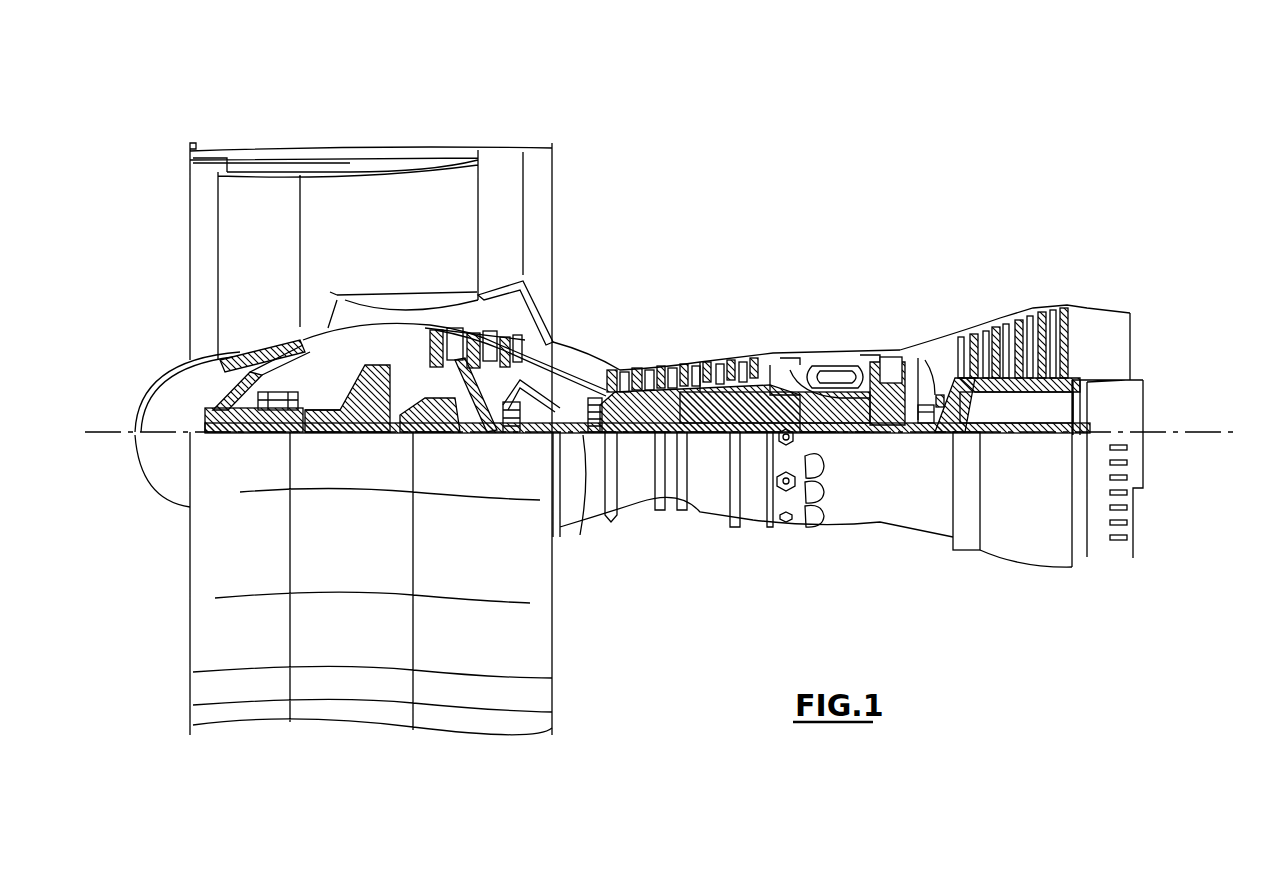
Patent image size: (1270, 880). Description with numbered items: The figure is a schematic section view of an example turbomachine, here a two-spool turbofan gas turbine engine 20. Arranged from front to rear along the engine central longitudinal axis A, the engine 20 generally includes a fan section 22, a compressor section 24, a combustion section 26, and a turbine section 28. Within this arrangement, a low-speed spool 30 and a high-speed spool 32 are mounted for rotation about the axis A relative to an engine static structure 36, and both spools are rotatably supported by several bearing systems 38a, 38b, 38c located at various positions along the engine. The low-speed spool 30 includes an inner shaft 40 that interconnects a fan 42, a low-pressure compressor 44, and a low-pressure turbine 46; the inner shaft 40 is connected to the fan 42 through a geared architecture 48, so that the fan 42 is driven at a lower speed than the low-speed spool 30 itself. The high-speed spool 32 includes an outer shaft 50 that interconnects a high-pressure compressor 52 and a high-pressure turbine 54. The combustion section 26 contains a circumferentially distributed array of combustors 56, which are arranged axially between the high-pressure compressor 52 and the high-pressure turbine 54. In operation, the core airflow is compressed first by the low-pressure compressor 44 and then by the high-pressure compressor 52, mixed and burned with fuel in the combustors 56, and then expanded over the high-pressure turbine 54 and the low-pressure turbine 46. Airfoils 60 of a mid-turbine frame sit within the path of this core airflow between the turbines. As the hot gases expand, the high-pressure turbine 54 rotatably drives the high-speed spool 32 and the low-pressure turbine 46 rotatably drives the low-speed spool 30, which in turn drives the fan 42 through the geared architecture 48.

The gas turbine engine 20 is at (840, 188).
The fan section 22 is at (300, 140).
The compressor section 24 is at (606, 336).
The combustion section 26 is at (826, 322).
The turbine section 28 is at (974, 288).
The low-speed spool 30 is at (711, 445).
The high-speed spool 32 is at (752, 397).
The engine static structure 36 is at (750, 528).
The bearing system 38a is at (303, 434).
The bearing system 38b is at (512, 434).
The bearing system 38c is at (930, 428).
The inner shaft 40 is at (580, 520).
The fan 42 is at (273, 281).
The low-pressure compressor 44 is at (487, 332).
The low-pressure turbine 46 is at (1018, 330).
The geared architecture 48 is at (380, 415).
The outer shaft 50 is at (834, 434).
The high-pressure compressor 52 is at (680, 370).
The high-pressure turbine 54 is at (890, 360).
The combustor 56 is at (825, 378).
The airfoil 60 is at (960, 400).
The engine central longitudinal axis A is at (1223, 433).